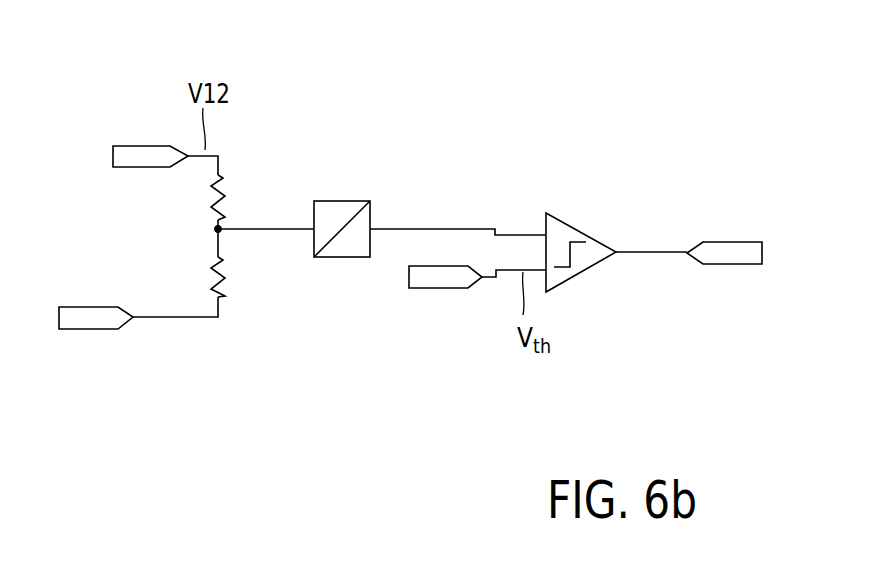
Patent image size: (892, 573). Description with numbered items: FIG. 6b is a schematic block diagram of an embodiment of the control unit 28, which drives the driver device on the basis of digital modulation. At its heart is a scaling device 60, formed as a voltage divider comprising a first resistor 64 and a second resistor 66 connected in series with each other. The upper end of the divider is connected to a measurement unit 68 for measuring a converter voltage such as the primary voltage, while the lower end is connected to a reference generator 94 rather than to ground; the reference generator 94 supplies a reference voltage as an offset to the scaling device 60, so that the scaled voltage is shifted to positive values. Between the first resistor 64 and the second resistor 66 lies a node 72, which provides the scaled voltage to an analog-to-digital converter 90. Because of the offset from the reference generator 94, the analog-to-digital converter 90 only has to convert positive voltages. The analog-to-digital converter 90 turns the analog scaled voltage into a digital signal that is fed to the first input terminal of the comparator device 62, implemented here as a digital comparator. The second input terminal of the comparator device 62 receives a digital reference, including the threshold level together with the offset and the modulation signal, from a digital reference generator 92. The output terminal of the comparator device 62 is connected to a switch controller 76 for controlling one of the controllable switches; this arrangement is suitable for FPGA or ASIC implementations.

The scaling device 60 is at (250, 70).
The control unit 28 is at (608, 108).
The measurement unit 68 is at (141, 146).
The first resistor 64 is at (222, 205).
The node 72 is at (215, 231).
The second resistor 66 is at (210, 275).
The reference generator 94 is at (68, 330).
The analog-to-digital converter 90 is at (343, 201).
The comparator device 62 is at (593, 240).
The switch controller 76 is at (735, 242).
The digital reference generator 92 is at (443, 290).